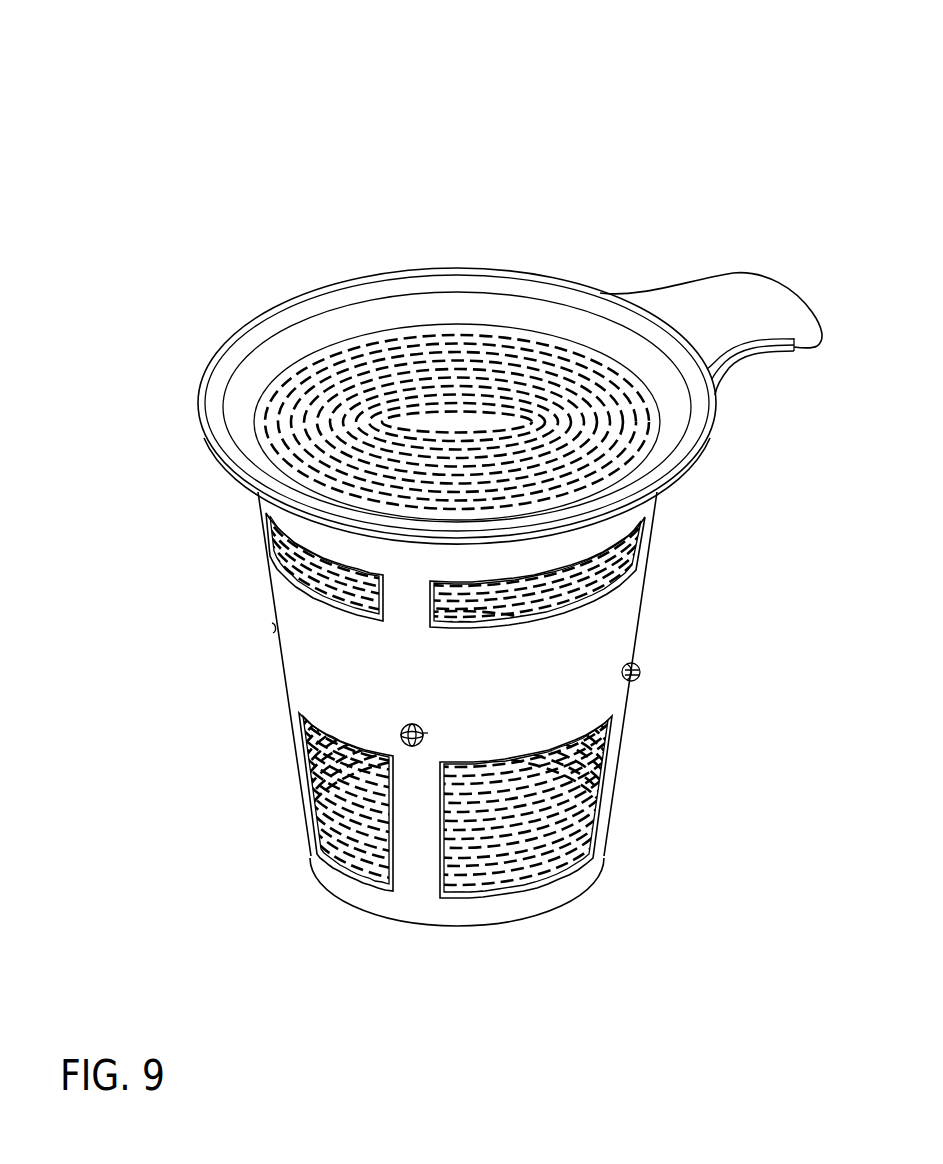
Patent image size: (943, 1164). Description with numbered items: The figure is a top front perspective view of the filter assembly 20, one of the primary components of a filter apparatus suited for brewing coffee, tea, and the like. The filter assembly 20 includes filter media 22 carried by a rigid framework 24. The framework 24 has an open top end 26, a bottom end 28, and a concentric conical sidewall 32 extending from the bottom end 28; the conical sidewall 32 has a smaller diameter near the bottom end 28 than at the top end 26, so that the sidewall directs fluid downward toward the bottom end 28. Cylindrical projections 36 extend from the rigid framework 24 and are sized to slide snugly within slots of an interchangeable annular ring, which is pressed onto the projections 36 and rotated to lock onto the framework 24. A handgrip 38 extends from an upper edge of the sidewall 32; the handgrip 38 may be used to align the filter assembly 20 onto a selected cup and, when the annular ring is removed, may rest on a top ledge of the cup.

The filter assembly 20 is at (310, 125).
The filter media 22 is at (427, 383).
The rigid framework 24 is at (313, 665).
The open top end 26 is at (280, 333).
The bottom end 28 is at (503, 930).
The conical sidewall 32 is at (620, 750).
The cylindrical projections 36 is at (642, 672).
The handgrip 38 is at (708, 317).